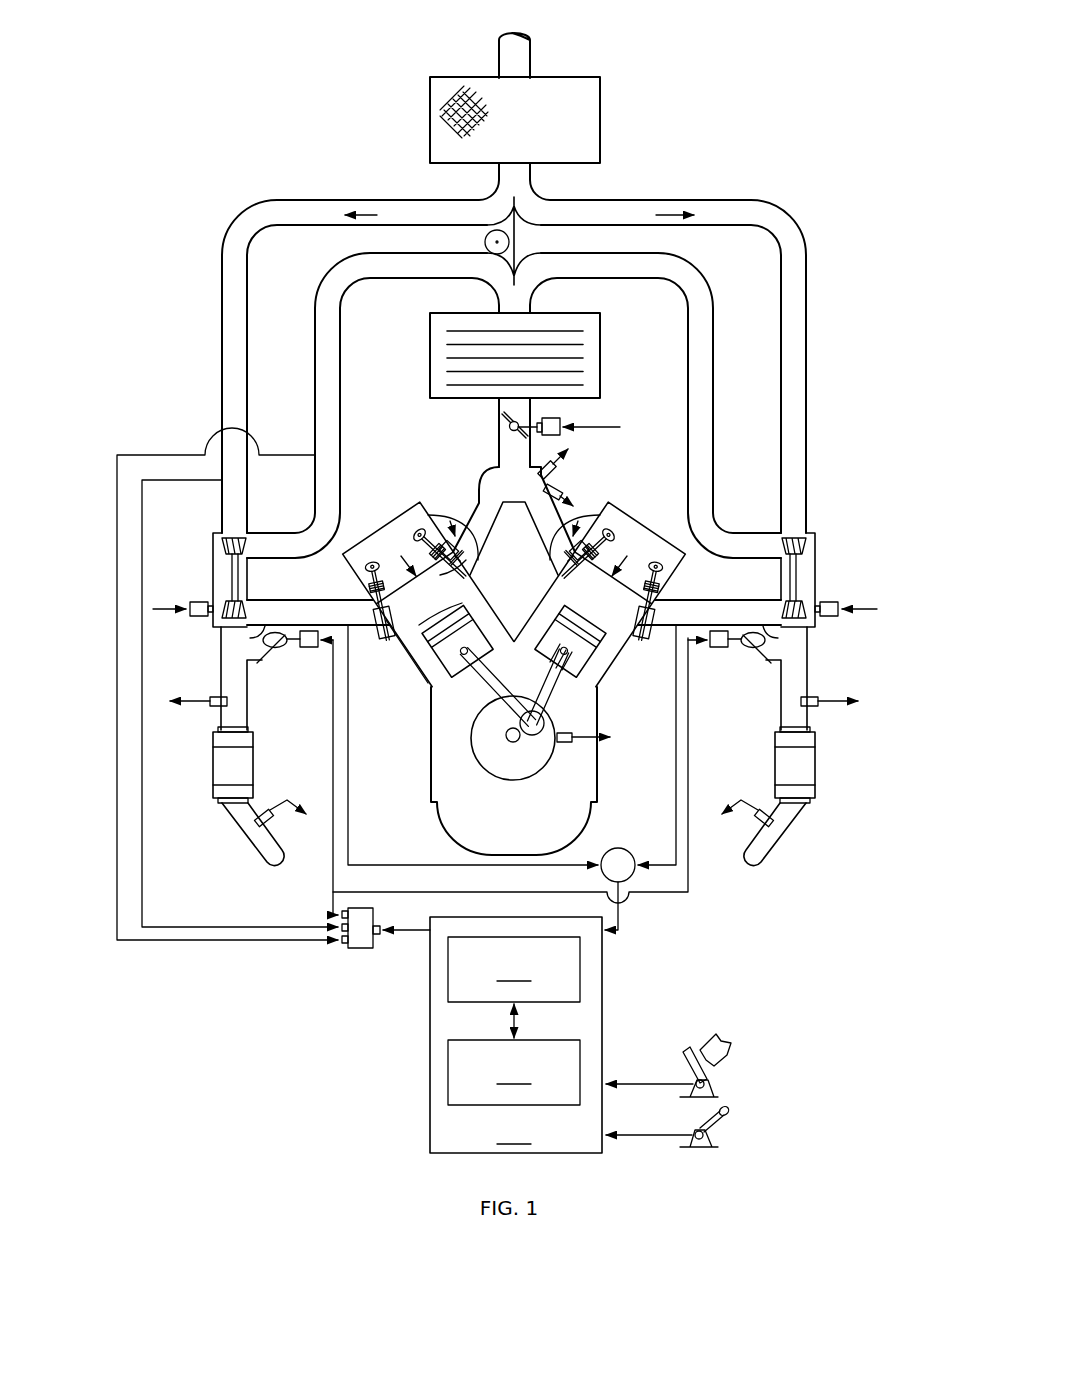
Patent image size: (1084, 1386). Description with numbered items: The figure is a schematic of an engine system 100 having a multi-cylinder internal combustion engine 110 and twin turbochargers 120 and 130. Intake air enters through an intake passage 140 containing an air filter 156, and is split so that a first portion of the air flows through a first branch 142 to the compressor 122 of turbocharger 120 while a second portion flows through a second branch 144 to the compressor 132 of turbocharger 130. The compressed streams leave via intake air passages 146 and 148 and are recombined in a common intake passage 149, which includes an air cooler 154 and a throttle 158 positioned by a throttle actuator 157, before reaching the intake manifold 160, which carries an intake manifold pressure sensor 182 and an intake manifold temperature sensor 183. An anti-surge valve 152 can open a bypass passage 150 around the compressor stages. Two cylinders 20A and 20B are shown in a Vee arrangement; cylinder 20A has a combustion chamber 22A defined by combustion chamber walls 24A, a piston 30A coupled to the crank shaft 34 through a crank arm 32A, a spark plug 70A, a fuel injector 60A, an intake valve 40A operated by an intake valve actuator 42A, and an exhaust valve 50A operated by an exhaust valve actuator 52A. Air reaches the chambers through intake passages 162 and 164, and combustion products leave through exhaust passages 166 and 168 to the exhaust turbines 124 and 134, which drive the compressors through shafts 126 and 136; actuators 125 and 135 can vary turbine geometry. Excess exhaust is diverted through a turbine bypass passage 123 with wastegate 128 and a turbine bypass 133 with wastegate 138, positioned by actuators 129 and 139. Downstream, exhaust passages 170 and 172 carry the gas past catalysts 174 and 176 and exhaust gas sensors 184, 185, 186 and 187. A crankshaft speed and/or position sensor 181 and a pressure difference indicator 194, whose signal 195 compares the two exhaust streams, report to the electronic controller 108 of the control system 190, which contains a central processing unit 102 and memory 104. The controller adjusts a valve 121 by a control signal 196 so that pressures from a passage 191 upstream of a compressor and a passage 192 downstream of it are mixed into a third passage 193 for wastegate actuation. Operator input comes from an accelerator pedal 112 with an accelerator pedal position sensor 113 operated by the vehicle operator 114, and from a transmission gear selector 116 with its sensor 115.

The engine system 100 is at (513, 597).
The central processing unit 102 is at (514, 969).
The memory 104 is at (514, 1072).
The electronic controller 108 is at (514, 1133).
The internal combustion engine 110 is at (443, 822).
The accelerator pedal 112 is at (705, 1046).
The accelerator pedal position sensor 113 is at (714, 1080).
The vehicle operator 114 is at (719, 1046).
The gear selector sensor 115 is at (715, 1126).
The transmission gear selector 116 is at (730, 1112).
The first turbocharger 120 is at (226, 611).
The valve 121 is at (348, 950).
The compressor 122 is at (216, 540).
The turbine bypass passage 123 is at (265, 650).
The exhaust turbine 124 is at (220, 622).
The variable geometry turbine actuator 125 is at (192, 599).
The shaft 126 is at (241, 585).
The wastegate 128 is at (304, 650).
The wastegate actuator 129 is at (311, 647).
The second turbocharger 130 is at (812, 574).
The compressor 132 is at (812, 541).
The turbine bypass 133 is at (766, 653).
The exhaust turbine 134 is at (812, 614).
The variable geometry turbine actuator 135 is at (834, 600).
The shaft 136 is at (788, 586).
The wastegate 138 is at (747, 650).
The wastegate actuator 139 is at (717, 648).
The intake passage 140 is at (532, 62).
The first branch of intake passage 142 is at (372, 200).
The second branch of intake passage 144 is at (712, 200).
The intake air passage 146 is at (342, 358).
The intake air passage 148 is at (716, 358).
The common intake passage 149 is at (512, 448).
The bypass passage 150 is at (510, 242).
The anti-surge valve 152 is at (485, 241).
The air cooler 154 is at (603, 366).
The air filter 156 is at (580, 120).
The throttle actuator 157 is at (562, 418).
The throttle 158 is at (502, 415).
The intake manifold 160 is at (488, 474).
The intake passage 162 is at (487, 545).
The intake passage 164 is at (480, 528).
The exhaust passage 166 is at (337, 606).
The exhaust passage 168 is at (693, 606).
The exhaust passage 170 is at (240, 722).
The exhaust passage 172 is at (783, 701).
The catalyst 174 is at (245, 758).
The catalyst 176 is at (787, 760).
The speed and/or position sensor 181 is at (563, 744).
The intake manifold pressure sensor 182 is at (551, 475).
The intake manifold temperature sensor 183 is at (562, 495).
The exhaust gas sensor 184 is at (213, 708).
The exhaust gas sensor 185 is at (275, 825).
The exhaust gas sensor 186 is at (810, 697).
The exhaust gas sensor 187 is at (753, 828).
The engine control system 190 is at (467, 1035).
The passage 191 is at (145, 511).
The passage 192 is at (172, 454).
The third passage 193 is at (332, 894).
The pressure difference indicator 194 is at (624, 847).
The pressure difference signal 195 is at (622, 918).
The control signal 196 is at (412, 936).
The cylinder 20A is at (425, 632).
The cylinder 20B is at (596, 670).
The combustion chamber 22A is at (457, 641).
The combustion chamber walls 24A is at (433, 674).
The piston 30A is at (438, 680).
The crank arm 32A is at (490, 685).
The crank shaft 34 is at (507, 742).
The intake valve 40A is at (451, 553).
The intake valve actuator 42A is at (384, 622).
The exhaust valve 50A is at (425, 581).
The exhaust valve actuator 52A is at (380, 601).
The fuel injector 60A is at (482, 574).
The spark plug 70A is at (441, 554).